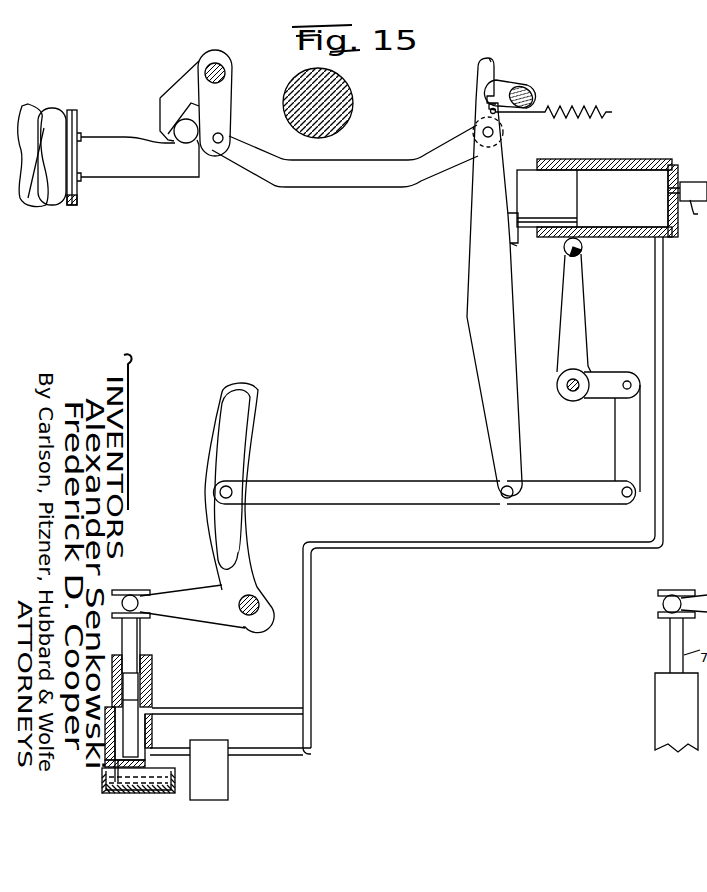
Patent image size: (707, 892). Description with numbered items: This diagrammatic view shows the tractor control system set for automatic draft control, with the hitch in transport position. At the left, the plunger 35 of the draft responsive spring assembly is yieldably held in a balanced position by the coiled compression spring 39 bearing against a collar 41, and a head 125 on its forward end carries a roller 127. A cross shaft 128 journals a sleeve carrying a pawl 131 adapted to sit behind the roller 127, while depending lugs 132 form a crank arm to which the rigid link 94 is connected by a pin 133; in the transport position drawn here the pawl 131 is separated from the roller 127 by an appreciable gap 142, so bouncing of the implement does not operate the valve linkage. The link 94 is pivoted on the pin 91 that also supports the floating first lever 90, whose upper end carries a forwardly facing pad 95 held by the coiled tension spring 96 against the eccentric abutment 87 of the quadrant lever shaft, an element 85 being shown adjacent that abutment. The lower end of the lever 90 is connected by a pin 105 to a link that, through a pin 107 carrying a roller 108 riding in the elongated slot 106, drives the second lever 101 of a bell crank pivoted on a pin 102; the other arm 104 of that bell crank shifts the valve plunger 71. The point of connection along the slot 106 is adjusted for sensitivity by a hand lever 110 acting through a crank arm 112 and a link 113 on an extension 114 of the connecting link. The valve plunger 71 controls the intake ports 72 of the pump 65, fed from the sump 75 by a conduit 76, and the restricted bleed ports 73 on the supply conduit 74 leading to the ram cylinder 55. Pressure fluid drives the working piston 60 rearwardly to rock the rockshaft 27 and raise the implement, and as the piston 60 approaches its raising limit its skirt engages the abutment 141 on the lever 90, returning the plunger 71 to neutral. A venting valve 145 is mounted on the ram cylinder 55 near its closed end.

The rockshaft 27 is at (352, 100).
The plunger 35 is at (47, 163).
The coiled compression spring 39 is at (50, 112).
The collar 41 is at (76, 205).
The ram cylinder 55 is at (600, 237).
The working piston 60 is at (572, 200).
The pump 65 is at (229, 776).
The valve plunger 71 is at (140, 642).
The intake ports 72 is at (152, 754).
The bleed ports 73 is at (152, 712).
The supply conduit 74 is at (311, 675).
The sump 75 is at (168, 779).
The conduit 76 is at (118, 742).
The roller 85 is at (530, 92).
The eccentric abutment 87 is at (505, 78).
The first lever 90 is at (470, 277).
The pin 91 is at (494, 132).
The rigid link 94 is at (372, 187).
The pad 95 is at (491, 62).
The coiled tension spring 96 is at (578, 104).
The second lever 101 is at (256, 412).
The pin 102 is at (252, 614).
The arm 104 is at (190, 602).
The pin 105 is at (507, 498).
The slot 106 is at (218, 456).
The pin 107 is at (220, 492).
The roller 108 is at (232, 492).
The hand lever 110 is at (580, 313).
The crank arm 112 is at (612, 375).
The link 113 is at (614, 440).
The extension 114 is at (575, 500).
The head 125 is at (136, 177).
The roller 127 is at (198, 145).
The cross shaft 128 is at (224, 70).
The pawl 131 is at (160, 110).
The lugs 132 is at (230, 112).
The pin 133 is at (223, 136).
The abutment 141 is at (517, 246).
The gap 142 is at (176, 141).
The valve 145 is at (678, 178).